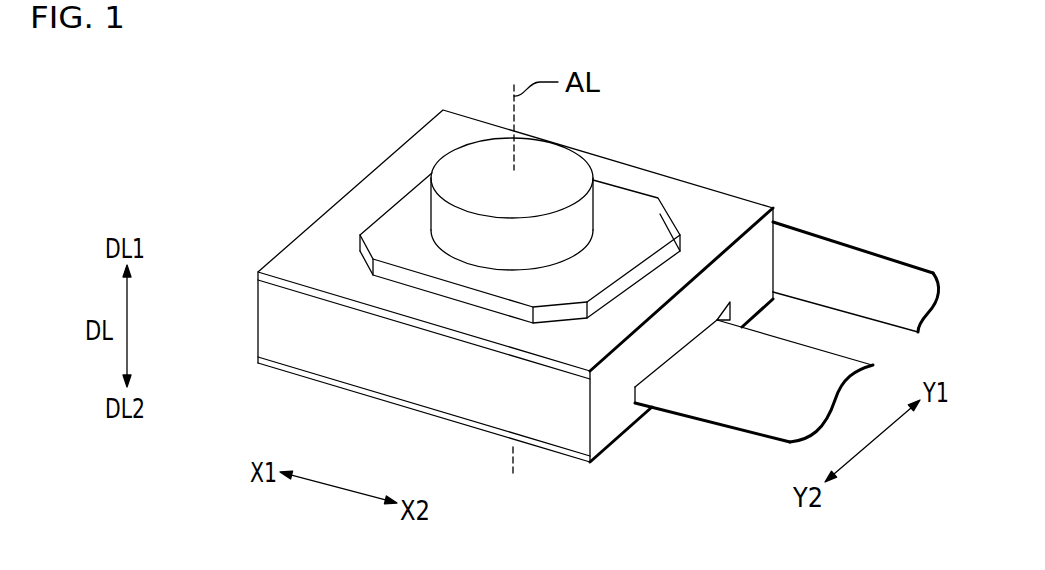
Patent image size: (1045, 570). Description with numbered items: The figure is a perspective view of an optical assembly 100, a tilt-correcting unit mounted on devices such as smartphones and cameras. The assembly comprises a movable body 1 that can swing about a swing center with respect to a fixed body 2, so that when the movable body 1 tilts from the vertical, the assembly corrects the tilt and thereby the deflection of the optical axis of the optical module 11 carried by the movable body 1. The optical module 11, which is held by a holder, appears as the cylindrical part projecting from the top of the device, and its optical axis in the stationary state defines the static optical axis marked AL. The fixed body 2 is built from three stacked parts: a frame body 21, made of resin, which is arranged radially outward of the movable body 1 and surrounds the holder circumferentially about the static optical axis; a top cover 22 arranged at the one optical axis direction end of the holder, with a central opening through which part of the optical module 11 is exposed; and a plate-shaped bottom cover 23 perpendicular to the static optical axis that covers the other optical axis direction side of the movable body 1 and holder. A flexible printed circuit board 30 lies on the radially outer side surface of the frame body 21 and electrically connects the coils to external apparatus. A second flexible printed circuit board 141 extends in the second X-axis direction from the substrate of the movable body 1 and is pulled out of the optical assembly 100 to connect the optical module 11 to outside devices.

The optical assembly 100 is at (309, 168).
The movable body 1 is at (605, 205).
The optical module 11 is at (637, 227).
The fixed body 2 is at (197, 224).
The top cover 22 is at (293, 262).
The frame body 21 is at (268, 320).
The bottom cover 23 is at (277, 368).
The flexible printed circuit board 30 is at (880, 268).
The flexible printed circuit board 141 is at (765, 420).